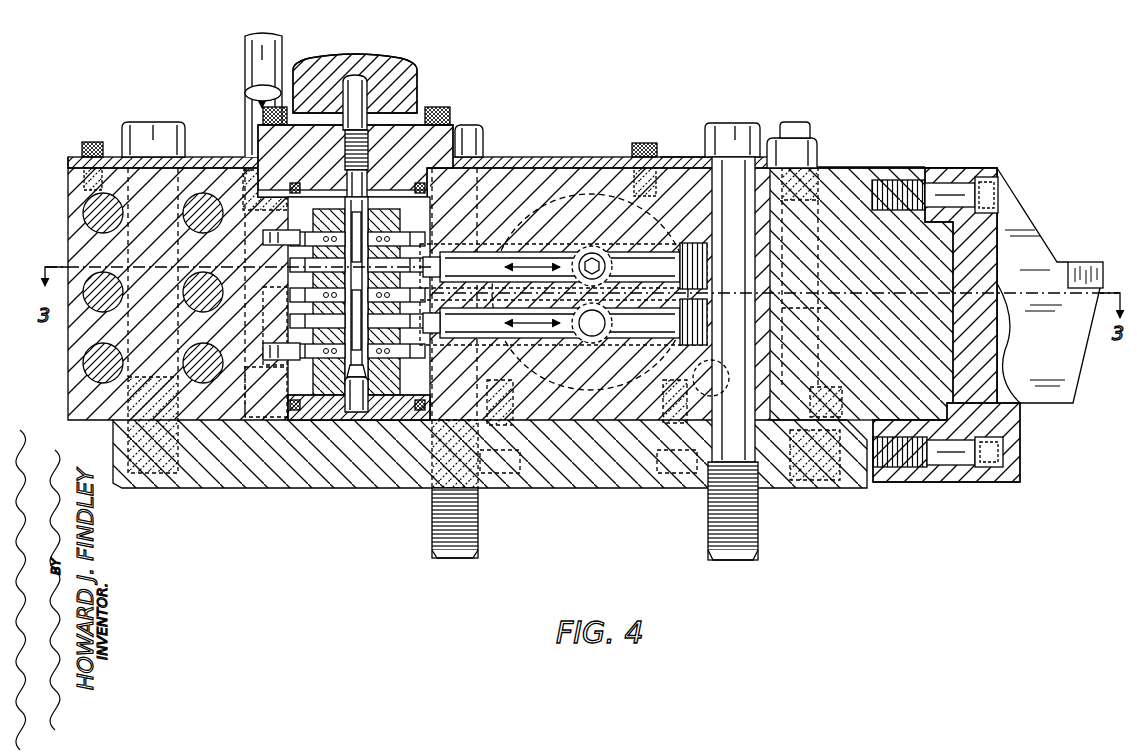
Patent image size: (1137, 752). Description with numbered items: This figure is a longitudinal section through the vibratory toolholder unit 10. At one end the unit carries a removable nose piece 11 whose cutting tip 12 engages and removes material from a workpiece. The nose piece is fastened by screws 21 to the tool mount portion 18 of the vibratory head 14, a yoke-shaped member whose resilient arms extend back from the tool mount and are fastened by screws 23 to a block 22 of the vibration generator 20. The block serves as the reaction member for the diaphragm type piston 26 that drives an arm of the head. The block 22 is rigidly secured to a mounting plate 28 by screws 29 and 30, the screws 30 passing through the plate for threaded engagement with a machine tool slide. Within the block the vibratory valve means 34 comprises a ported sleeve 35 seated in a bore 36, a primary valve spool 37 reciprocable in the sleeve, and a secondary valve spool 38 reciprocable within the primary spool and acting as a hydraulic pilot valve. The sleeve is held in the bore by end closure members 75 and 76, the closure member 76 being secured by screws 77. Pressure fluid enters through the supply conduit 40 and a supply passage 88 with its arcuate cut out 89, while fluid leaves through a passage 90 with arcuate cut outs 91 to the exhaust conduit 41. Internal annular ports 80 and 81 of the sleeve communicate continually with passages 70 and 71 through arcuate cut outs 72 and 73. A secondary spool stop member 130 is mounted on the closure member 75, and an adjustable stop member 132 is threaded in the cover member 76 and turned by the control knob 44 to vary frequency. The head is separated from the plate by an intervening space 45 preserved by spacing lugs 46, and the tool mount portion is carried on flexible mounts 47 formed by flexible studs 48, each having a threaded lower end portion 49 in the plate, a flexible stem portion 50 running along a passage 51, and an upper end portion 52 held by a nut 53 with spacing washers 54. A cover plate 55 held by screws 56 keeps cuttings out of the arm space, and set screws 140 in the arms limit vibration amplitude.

The vibratory toolholder unit 10 is at (930, 93).
The nose piece 11 is at (1028, 244).
The cutting tip 12 is at (1088, 263).
The vibratory head 14 is at (902, 269).
The tool mount portion 18 is at (905, 168).
The vibration generator 20 is at (545, 158).
The screws 21 is at (950, 188).
The block 22 is at (508, 163).
The screws 23 is at (83, 214).
The diaphragm type piston 26 is at (600, 166).
The mounting plate 28 is at (240, 490).
The screws 29 is at (155, 122).
The screws 30 is at (732, 123).
The vibratory valve means 34 is at (455, 214).
The ported sleeve 35 is at (312, 424).
The bore 36 is at (286, 416).
The primary valve spool 37 is at (346, 422).
The secondary valve spool 38 is at (418, 366).
The supply conduit 40 is at (245, 48).
The exhaust conduit 41 is at (245, 98).
The control knob 44 is at (395, 66).
The intervening space 45 is at (855, 426).
The spacing lug 46 is at (662, 425).
The flexible mounts 47 is at (816, 134).
The flexible stud 48 is at (830, 250).
The lower end portion 49 is at (760, 490).
The flexible stem portion 50 is at (822, 332).
The passage 51 is at (824, 309).
The upper end portion 52 is at (836, 168).
The nut 53 is at (818, 150).
The spacing washers 54 is at (905, 168).
The cover plate 55 is at (680, 158).
The screws 56 is at (645, 143).
The passage 70 is at (585, 257).
The passage 71 is at (583, 340).
The arcuate cut out 72 is at (441, 268).
The arcuate cut out 73 is at (441, 324).
The end closure member 75 is at (418, 386).
The end closure member 76 is at (258, 150).
The screws 77 is at (447, 117).
The internal annular port 80 is at (432, 254).
The internal annular port 81 is at (428, 344).
The supply passage 88 is at (268, 320).
The arcuate cut out 89 is at (265, 303).
The passage 90 is at (262, 376).
The arcuate cut outs 91 is at (263, 238).
The secondary spool stop member 130 is at (370, 415).
The adjustable stop member 132 is at (372, 185).
The set screws 140 is at (662, 344).